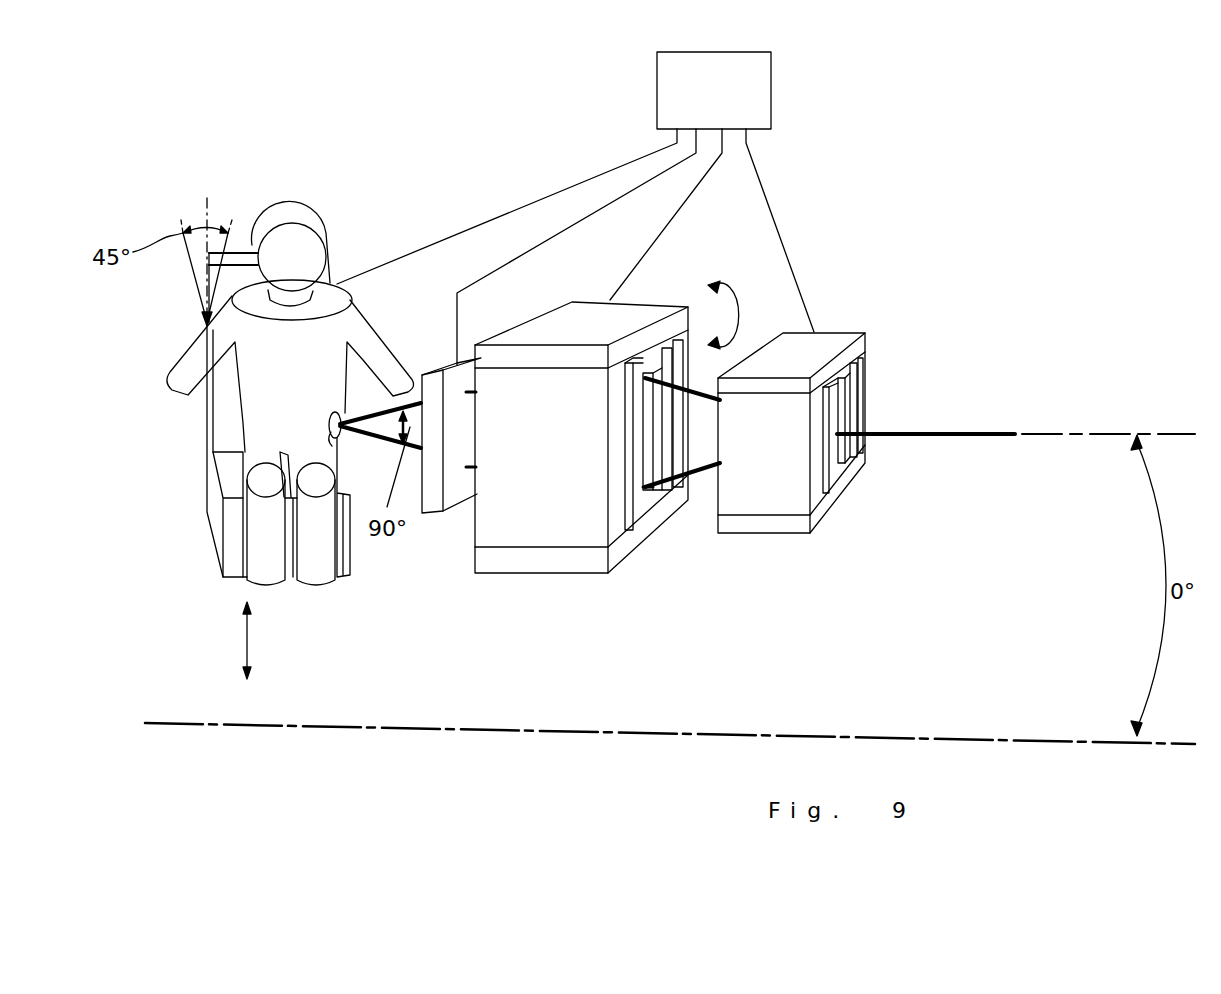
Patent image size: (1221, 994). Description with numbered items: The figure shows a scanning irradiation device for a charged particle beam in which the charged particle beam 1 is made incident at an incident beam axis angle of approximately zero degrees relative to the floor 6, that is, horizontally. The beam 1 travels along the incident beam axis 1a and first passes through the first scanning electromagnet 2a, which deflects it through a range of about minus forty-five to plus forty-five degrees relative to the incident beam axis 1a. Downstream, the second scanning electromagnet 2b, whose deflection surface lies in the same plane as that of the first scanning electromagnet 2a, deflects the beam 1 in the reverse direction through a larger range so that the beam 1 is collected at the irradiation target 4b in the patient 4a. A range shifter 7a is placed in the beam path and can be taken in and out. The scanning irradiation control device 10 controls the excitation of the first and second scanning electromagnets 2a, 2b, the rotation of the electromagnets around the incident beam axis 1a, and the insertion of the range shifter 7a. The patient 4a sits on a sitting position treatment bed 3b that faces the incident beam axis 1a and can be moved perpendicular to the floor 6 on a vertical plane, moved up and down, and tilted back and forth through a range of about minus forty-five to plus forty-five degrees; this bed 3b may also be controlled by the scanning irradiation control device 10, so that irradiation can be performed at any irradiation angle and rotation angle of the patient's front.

The scanning irradiation control device 10 is at (771, 95).
The patient 4a is at (183, 357).
The irradiation target 4b is at (333, 423).
The sitting position treatment bed 3b is at (215, 505).
The range shifter 7a is at (437, 514).
The second scanning electromagnet 2b is at (543, 573).
The first scanning electromagnet 2a is at (772, 545).
The charged particle beam 1 is at (924, 428).
The incident beam axis 1a is at (1008, 428).
The floor 6 is at (954, 737).